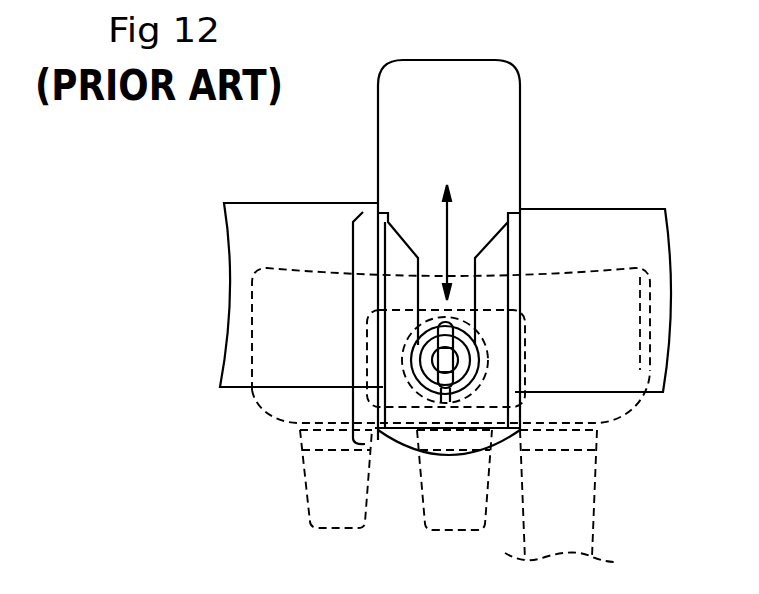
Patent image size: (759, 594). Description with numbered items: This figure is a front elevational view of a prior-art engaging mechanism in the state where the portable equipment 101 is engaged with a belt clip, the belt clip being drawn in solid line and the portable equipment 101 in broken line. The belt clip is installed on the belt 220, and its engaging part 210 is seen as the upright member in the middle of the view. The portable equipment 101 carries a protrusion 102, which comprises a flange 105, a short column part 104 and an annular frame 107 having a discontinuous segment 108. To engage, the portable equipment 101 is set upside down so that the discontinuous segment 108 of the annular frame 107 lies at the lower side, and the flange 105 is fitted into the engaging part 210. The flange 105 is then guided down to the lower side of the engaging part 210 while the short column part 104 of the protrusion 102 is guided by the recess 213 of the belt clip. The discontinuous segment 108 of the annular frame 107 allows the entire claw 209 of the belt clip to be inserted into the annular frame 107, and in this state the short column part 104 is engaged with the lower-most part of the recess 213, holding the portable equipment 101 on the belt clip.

The engaging part 210 is at (352, 256).
The belt 220 is at (625, 225).
The recess 213 is at (462, 293).
The portable equipment 101 is at (608, 408).
The protrusion 102 is at (485, 397).
The short column part 104 is at (470, 372).
The flange 105 is at (473, 328).
The annular frame 107 is at (488, 355).
The claw 209 is at (432, 346).
The discontinuous segment 108 is at (443, 402).